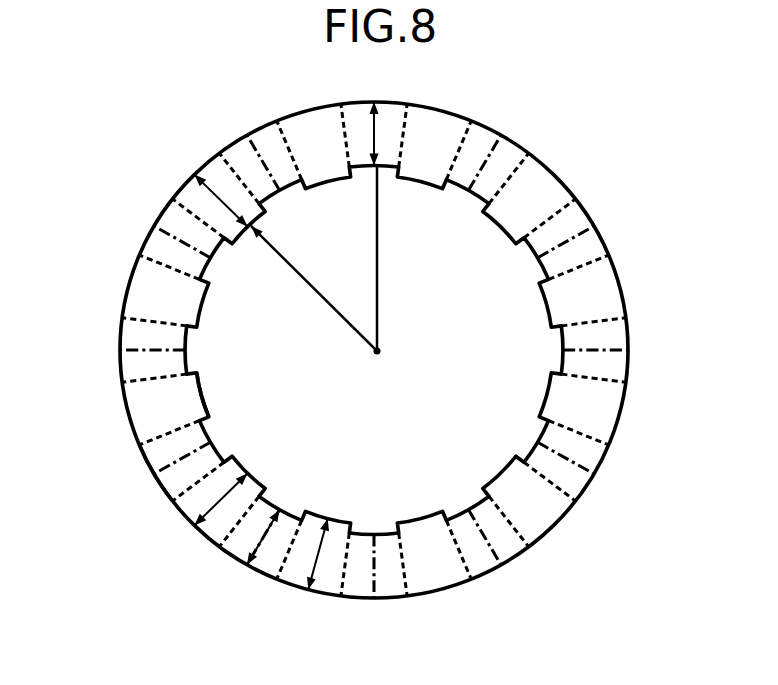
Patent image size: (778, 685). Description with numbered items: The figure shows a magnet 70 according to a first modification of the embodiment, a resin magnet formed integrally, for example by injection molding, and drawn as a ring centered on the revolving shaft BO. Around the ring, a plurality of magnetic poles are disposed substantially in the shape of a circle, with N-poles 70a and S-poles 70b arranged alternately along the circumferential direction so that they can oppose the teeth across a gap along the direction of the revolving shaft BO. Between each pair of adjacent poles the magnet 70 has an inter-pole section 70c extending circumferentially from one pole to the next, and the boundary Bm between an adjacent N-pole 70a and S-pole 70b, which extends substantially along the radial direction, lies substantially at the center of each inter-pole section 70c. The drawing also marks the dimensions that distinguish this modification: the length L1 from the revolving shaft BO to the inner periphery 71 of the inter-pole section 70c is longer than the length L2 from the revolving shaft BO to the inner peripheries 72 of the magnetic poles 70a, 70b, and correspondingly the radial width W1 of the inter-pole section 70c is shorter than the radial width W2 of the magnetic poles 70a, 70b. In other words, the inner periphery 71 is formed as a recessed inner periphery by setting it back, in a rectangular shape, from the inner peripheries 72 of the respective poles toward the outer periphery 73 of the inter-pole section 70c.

The magnet 70 is at (630, 281).
The N-pole 70a is at (134, 416).
The S-pole 70b is at (133, 292).
The inter-pole section 70c is at (262, 134).
The inner periphery of the inter-pole section 71 is at (188, 346).
The inner peripheries of the magnetic poles 72 is at (204, 404).
The outer periphery of the inter-pole section 73 is at (160, 490).
The boundary of the magnetic poles Bm is at (158, 222).
The radial width of the inter-pole section W1 is at (380, 135).
The radial width of the magnetic poles W2 is at (226, 200).
The length from the revolving shaft to the inner periphery of the inter-pole section L1 is at (377, 168).
The length from the revolving shaft to the inner peripheries of the magnetic poles L2 is at (375, 351).
The revolving shaft BO is at (402, 354).